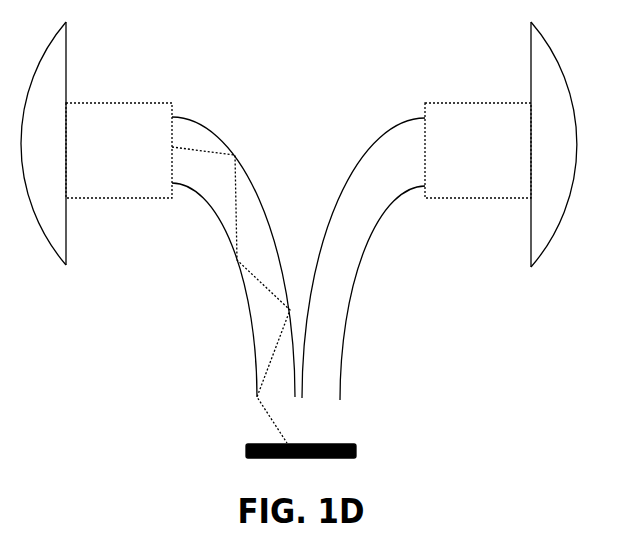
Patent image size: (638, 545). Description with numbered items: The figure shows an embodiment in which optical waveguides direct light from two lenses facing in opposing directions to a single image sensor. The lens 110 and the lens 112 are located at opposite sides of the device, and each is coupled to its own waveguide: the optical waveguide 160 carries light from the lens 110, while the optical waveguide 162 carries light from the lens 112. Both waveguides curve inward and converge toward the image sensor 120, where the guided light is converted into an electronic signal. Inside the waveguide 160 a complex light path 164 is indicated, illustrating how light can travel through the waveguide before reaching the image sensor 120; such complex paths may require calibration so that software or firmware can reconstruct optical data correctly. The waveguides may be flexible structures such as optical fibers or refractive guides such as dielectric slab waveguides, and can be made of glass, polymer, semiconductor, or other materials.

The lens 110 is at (96, 143).
The lens 112 is at (501, 144).
The image sensor 120 is at (357, 448).
The optical waveguide 160 is at (220, 227).
The optical waveguide 162 is at (383, 218).
The light path 164 is at (237, 195).